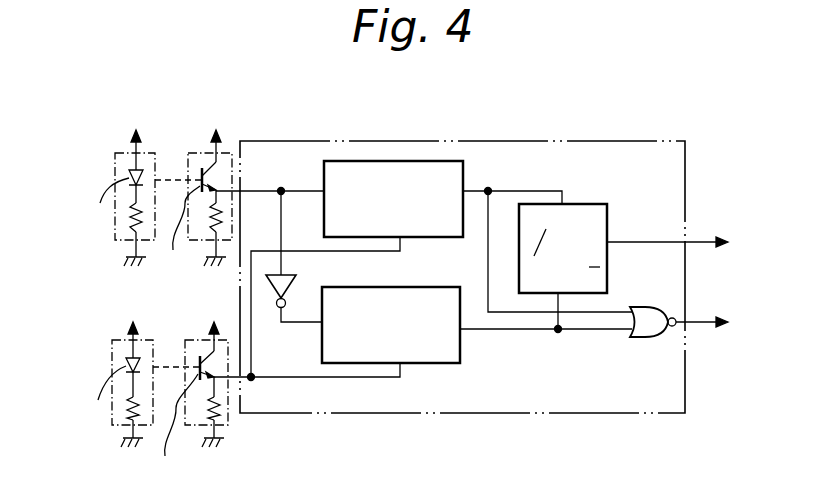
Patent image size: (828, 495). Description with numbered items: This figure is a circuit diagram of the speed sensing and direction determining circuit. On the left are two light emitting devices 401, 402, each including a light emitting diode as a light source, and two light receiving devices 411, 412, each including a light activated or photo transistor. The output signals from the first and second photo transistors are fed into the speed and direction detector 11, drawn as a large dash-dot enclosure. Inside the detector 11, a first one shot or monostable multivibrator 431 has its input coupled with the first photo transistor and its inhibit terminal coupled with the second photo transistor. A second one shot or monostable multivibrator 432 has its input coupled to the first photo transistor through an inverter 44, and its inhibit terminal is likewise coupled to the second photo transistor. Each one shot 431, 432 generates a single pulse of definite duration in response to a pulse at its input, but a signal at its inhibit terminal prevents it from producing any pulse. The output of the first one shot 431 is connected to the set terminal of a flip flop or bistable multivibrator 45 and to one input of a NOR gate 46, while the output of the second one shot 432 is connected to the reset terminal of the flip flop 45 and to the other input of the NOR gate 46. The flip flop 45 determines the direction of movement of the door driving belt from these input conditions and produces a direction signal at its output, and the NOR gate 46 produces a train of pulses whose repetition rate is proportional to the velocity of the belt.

The speed and direction detector 11 is at (284, 137).
The first light emitting device 401 is at (115, 162).
The second light emitting device 402 is at (112, 346).
The first light receiving device 411 is at (192, 153).
The second light receiving device 412 is at (185, 343).
The first one shot 431 is at (464, 169).
The second one shot 432 is at (388, 287).
The inverter 44 is at (292, 281).
The flip flop 45 is at (594, 204).
The NOR gate 46 is at (643, 306).